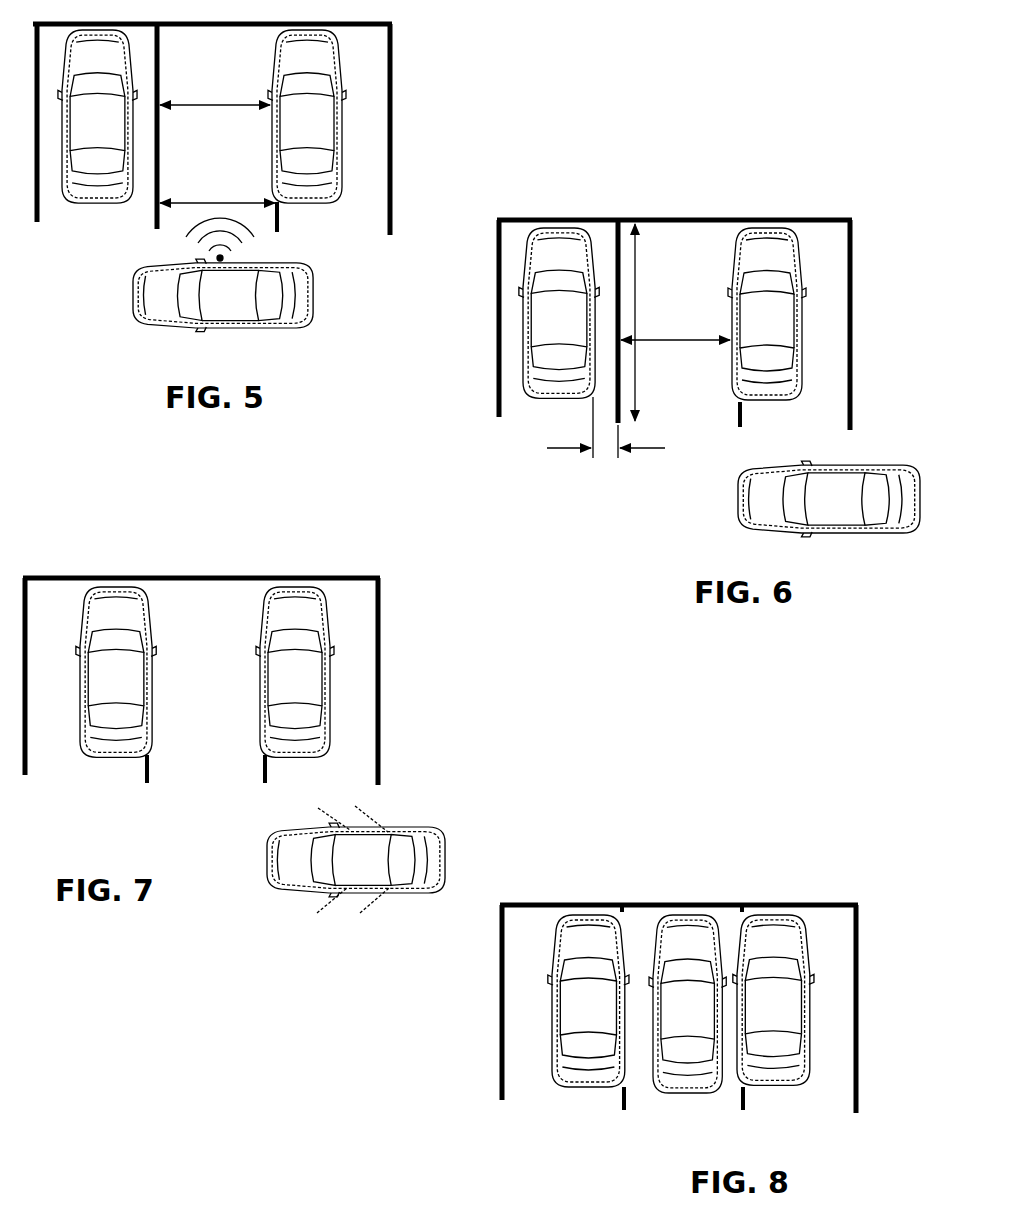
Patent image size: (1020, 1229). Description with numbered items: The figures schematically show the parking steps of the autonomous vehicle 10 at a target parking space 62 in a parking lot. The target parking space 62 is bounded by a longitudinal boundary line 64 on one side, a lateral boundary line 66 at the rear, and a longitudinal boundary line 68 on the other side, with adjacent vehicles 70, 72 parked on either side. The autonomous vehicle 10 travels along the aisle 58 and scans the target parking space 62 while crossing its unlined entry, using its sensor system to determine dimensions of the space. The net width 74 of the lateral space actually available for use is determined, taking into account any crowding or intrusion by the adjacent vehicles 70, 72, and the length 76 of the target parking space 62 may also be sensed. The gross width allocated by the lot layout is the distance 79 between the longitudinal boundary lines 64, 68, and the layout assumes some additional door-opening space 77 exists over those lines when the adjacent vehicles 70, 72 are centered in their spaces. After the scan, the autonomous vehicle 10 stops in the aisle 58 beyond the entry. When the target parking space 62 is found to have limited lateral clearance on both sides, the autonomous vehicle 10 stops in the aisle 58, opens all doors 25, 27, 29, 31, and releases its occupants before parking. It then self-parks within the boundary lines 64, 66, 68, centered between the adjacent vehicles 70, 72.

In FIG. 5, the autonomous vehicle 10 is at (199, 304).
In FIG. 6, the autonomous vehicle 10 is at (799, 506).
In FIG. 7, the autonomous vehicle 10 is at (329, 871).
In FIG. 8, the autonomous vehicle 10 is at (677, 1023).
In FIG. 7, the front door 25 is at (366, 811).
In FIG. 7, the front door 27 is at (376, 900).
In FIG. 7, the rear door 29 is at (343, 826).
In FIG. 7, the rear door 31 is at (328, 903).
In FIG. 5, the aisle 58 is at (341, 313).
In FIG. 6, the aisle 58 is at (701, 501).
In FIG. 7, the aisle 58 is at (232, 873).
In FIG. 5, the target parking space 62 is at (174, 149).
In FIG. 7, the target parking space 62 is at (189, 711).
In FIG. 8, the target parking space 62 is at (725, 918).
In FIG. 5, the longitudinal boundary line 64 is at (160, 55).
In FIG. 6, the longitudinal boundary line 64 is at (614, 246).
In FIG. 7, the longitudinal boundary line 64 is at (145, 770).
In FIG. 8, the longitudinal boundary line 64 is at (620, 1098).
In FIG. 5, the lateral boundary line 66 is at (243, 24).
In FIG. 6, the lateral boundary line 66 is at (696, 220).
In FIG. 7, the lateral boundary line 66 is at (213, 578).
In FIG. 8, the lateral boundary line 66 is at (690, 905).
In FIG. 5, the longitudinal boundary line 68 is at (281, 222).
In FIG. 6, the longitudinal boundary line 68 is at (746, 410).
In FIG. 7, the longitudinal boundary line 68 is at (262, 765).
In FIG. 8, the longitudinal boundary line 68 is at (740, 1098).
In FIG. 5, the adjacent vehicle 70 is at (84, 139).
In FIG. 6, the adjacent vehicle 70 is at (547, 338).
In FIG. 7, the adjacent vehicle 70 is at (100, 693).
In FIG. 8, the adjacent vehicle 70 is at (576, 1023).
In FIG. 5, the adjacent vehicle 72 is at (294, 139).
In FIG. 6, the adjacent vehicle 72 is at (754, 339).
In FIG. 7, the adjacent vehicle 72 is at (284, 693).
In FIG. 8, the adjacent vehicle 72 is at (762, 1023).
In FIG. 5, the net width 74 is at (207, 107).
In FIG. 6, the net width 74 is at (686, 338).
In FIG. 6, the length 76 is at (638, 384).
In FIG. 6, the space 77 is at (562, 450).
In FIG. 5, the distance 79 is at (195, 203).